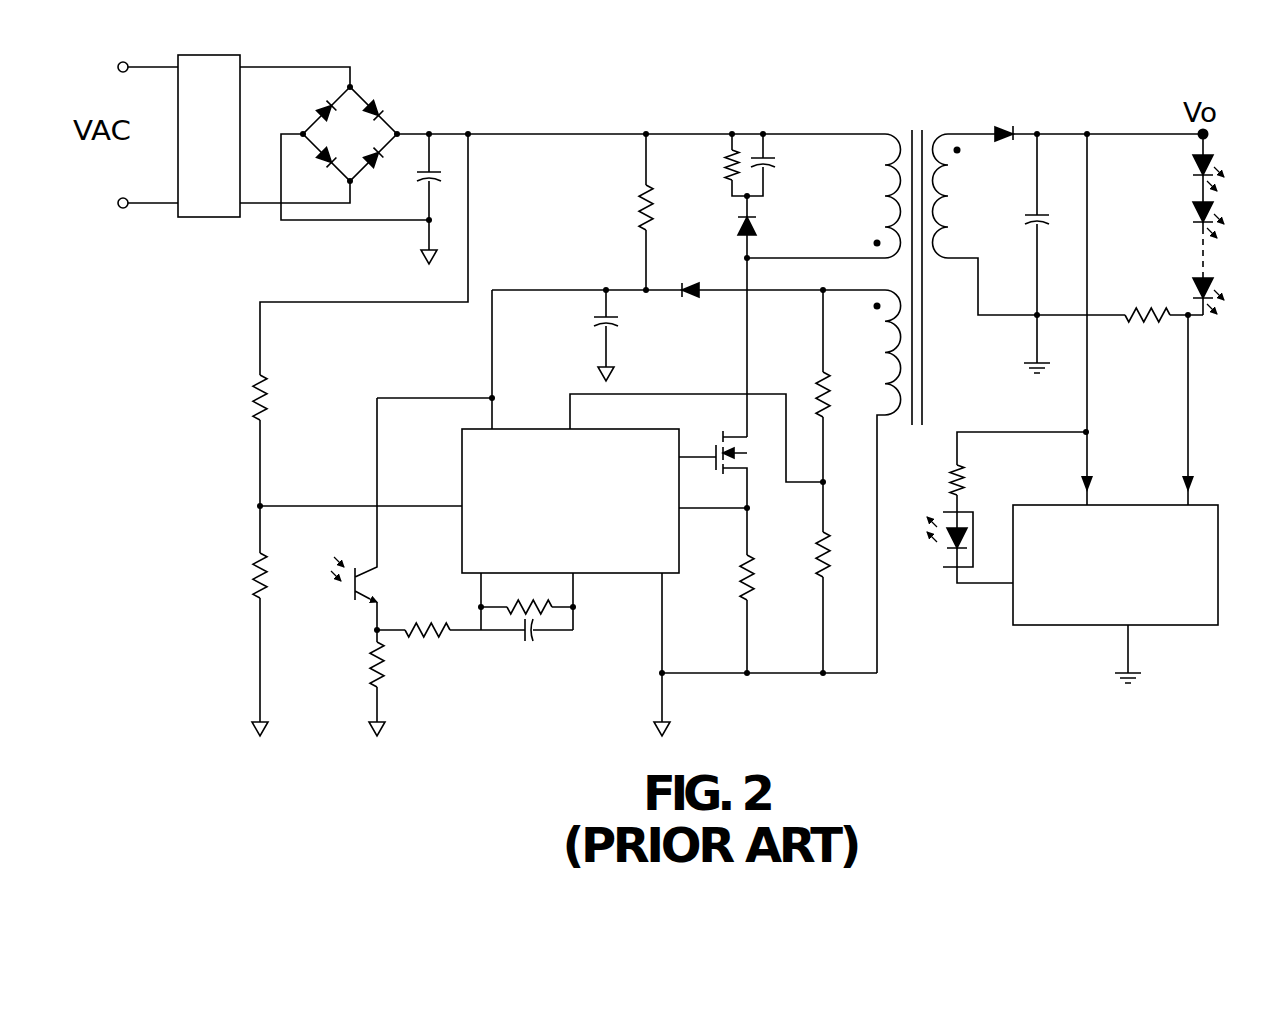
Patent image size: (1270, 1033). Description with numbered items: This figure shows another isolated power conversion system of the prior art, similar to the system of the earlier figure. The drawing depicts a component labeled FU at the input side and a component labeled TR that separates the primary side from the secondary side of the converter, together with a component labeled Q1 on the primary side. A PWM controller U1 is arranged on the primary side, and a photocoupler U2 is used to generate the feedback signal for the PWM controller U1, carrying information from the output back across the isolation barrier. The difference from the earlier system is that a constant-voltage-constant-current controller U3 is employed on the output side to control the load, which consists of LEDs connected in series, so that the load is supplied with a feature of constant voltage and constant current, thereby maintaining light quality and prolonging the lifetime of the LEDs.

The fuse FU is at (208, 55).
The transformer TR is at (893, 118).
The power switch transistor Q1 is at (753, 462).
The PWM controller U1 is at (613, 573).
The photocoupler U2 is at (948, 582).
The constant-voltage-constant-current controller U3 is at (1183, 625).